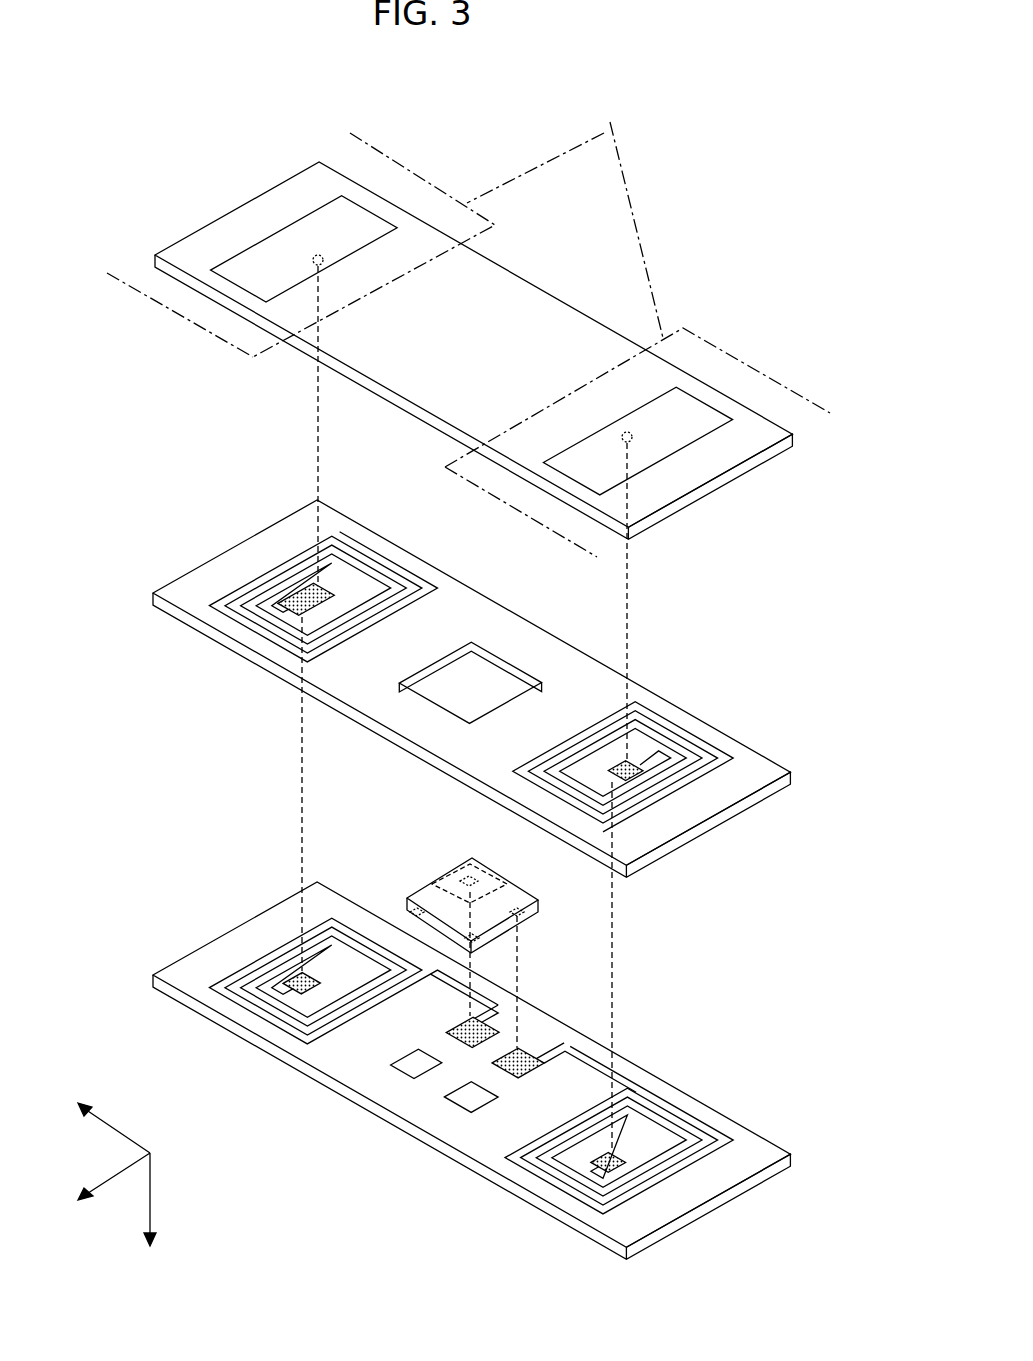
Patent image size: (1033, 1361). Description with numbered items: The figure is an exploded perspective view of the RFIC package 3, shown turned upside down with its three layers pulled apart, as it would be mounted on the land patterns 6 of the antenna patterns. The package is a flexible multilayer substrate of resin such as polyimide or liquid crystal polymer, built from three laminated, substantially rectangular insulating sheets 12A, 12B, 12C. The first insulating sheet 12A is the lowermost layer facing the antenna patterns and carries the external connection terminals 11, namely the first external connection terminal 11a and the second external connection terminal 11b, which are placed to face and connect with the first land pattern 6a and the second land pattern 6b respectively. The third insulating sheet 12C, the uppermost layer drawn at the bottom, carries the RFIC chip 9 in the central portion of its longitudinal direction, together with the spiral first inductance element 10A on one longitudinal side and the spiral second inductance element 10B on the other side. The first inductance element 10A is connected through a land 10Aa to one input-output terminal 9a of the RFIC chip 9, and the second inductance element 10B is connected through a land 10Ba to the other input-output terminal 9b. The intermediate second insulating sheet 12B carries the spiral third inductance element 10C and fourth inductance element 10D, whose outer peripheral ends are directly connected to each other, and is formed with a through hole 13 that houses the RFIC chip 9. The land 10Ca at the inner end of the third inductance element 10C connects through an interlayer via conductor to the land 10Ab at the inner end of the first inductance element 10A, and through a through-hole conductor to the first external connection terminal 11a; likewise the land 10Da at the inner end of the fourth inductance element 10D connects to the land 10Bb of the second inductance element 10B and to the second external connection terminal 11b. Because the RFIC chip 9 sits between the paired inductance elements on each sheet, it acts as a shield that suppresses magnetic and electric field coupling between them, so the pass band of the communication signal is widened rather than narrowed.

The RFIC package 3 is at (684, 206).
The land patterns 6 is at (565, 219).
The first land pattern 6a is at (450, 187).
The second land pattern 6b is at (722, 345).
The RFIC chip 9 is at (470, 857).
The input-output terminal 9a is at (446, 877).
The input-output terminal 9b is at (530, 916).
The first inductance element 10A is at (329, 933).
The land 10Aa is at (445, 1033).
The land 10Ab is at (297, 977).
The second inductance element 10B is at (662, 1108).
The land 10Ba is at (528, 1052).
The land 10Bb is at (625, 1163).
The third inductance element 10C is at (362, 560).
The land 10Ca is at (312, 590).
The fourth inductance element 10D is at (662, 728).
The land 10Da is at (641, 768).
The external connection terminals 11 is at (648, 418).
The first external connection terminal 11a is at (345, 220).
The second external connection terminal 11b is at (722, 402).
The first insulating sheet 12A is at (185, 252).
The second insulating sheet 12B is at (177, 593).
The third insulating sheet 12C is at (182, 962).
The through hole 13 is at (490, 675).